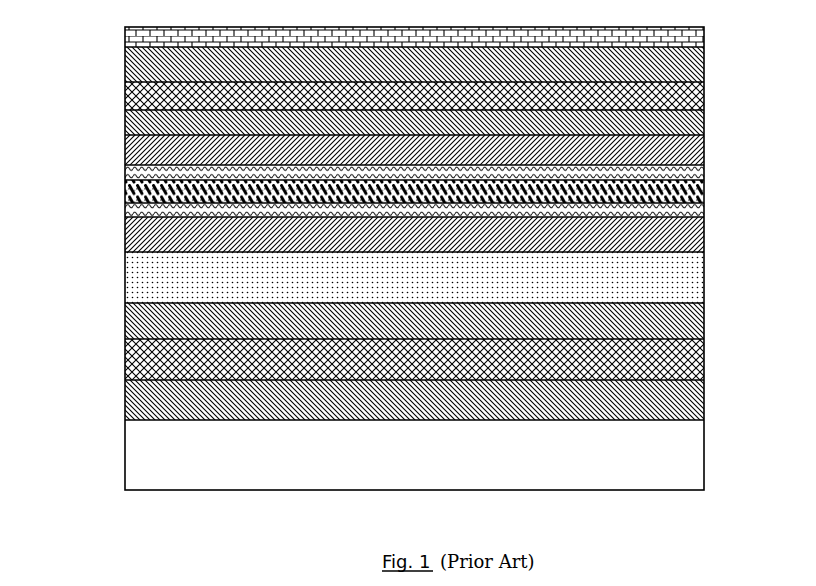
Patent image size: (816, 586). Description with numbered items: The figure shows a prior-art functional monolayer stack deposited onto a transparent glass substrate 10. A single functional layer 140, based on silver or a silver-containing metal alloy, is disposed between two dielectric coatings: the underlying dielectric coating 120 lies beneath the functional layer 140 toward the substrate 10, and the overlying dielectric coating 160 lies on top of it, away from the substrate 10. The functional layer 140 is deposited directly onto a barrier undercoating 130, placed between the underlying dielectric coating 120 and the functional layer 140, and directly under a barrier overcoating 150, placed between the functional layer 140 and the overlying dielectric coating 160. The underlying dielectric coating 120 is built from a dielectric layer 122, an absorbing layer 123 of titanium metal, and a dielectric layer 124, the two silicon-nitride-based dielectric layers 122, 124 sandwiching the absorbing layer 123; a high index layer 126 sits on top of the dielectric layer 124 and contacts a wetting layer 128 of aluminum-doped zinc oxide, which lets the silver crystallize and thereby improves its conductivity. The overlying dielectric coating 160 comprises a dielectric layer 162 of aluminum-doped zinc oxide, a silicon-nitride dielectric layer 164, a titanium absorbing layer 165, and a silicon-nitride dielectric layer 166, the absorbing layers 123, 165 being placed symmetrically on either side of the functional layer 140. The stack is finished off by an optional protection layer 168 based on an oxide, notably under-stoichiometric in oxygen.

The glass substrate 10 is at (427, 450).
The underlying dielectric coating 120 is at (406, 318).
The dielectric layer 122 is at (137, 390).
The absorbing layer 123 is at (137, 350).
The dielectric layer 124 is at (137, 318).
The high index layer 126 is at (137, 271).
The wetting layer 128 is at (137, 236).
The barrier undercoating 130 is at (137, 204).
The functional layer 140 is at (694, 194).
The barrier overcoating 150 is at (149, 174).
The overlying dielectric coating 160 is at (405, 92).
The dielectric layer 162 is at (137, 143).
The dielectric layer 164 is at (137, 108).
The absorbing layer 165 is at (137, 86).
The dielectric layer 166 is at (137, 55).
The protection layer 168 is at (137, 31).